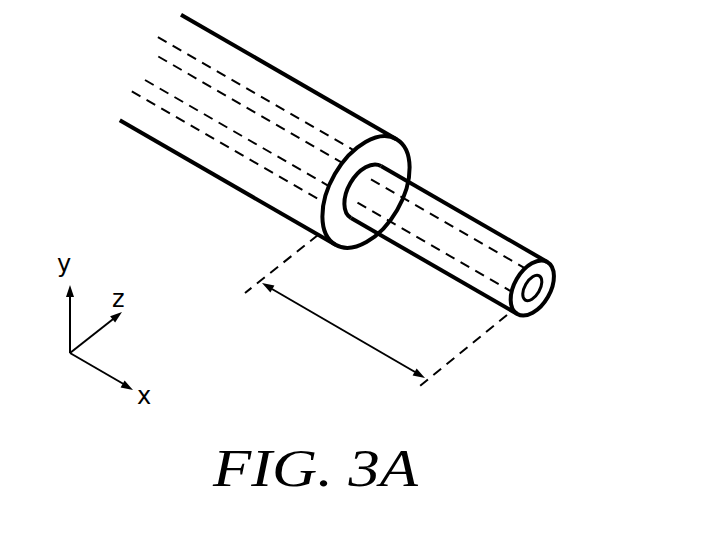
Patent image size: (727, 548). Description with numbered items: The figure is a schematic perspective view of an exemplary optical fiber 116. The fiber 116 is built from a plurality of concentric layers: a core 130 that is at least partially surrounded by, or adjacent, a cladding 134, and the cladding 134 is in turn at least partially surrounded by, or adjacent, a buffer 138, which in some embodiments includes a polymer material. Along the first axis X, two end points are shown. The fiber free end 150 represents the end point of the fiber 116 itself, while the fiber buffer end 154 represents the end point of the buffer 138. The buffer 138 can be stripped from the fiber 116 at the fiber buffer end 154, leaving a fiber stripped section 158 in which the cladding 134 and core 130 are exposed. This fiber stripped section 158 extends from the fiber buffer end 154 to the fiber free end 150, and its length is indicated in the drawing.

The fiber 116 is at (122, 179).
The buffer 138 is at (337, 117).
The fiber buffer end 154 is at (395, 155).
The cladding 134 is at (547, 276).
The core 130 is at (536, 292).
The fiber free end 150 is at (525, 311).
The fiber stripped section 158 is at (332, 326).